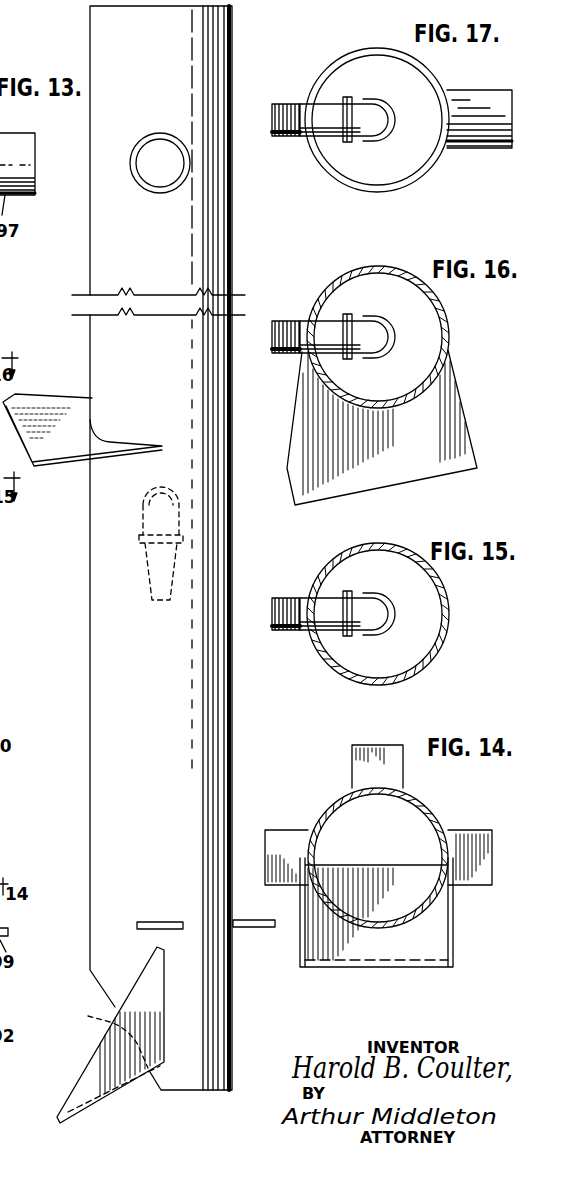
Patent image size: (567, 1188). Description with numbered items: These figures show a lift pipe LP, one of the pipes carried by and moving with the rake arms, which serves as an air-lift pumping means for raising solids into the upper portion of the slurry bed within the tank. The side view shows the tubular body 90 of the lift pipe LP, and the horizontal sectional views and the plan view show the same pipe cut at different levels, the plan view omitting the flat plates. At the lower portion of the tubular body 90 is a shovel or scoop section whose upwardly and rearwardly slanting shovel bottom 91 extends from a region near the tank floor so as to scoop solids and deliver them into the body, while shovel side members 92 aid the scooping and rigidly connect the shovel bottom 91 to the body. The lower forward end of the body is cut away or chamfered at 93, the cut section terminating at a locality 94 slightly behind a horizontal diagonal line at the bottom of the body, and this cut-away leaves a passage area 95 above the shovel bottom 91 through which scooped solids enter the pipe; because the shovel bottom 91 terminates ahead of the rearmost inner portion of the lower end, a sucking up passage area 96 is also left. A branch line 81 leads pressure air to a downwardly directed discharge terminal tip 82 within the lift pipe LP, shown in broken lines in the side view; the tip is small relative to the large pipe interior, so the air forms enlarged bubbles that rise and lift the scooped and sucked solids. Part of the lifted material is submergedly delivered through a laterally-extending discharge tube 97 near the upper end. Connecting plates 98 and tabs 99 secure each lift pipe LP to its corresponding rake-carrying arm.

In FIG. 13, the lift pipe LP is at (92, 608).
In FIG. 17, the lift pipe LP is at (333, 178).
In FIG. 16, the lift pipe LP is at (442, 302).
In FIG. 15, the lift pipe LP is at (448, 620).
In FIG. 14, the lift pipe LP is at (425, 805).
In FIG. 13, the tubular body 90 is at (233, 767).
In FIG. 13, the laterally-extending discharge tube 97 is at (154, 194).
In FIG. 17, the laterally-extending discharge tube 97 is at (470, 148).
In FIG. 13, the connecting plate 98 is at (68, 438).
In FIG. 16, the connecting plate 98 is at (418, 462).
In FIG. 13, the discharge terminal tip 82 is at (143, 561).
In FIG. 13, the tab 99 is at (240, 928).
In FIG. 14, the tab 99 is at (473, 875).
In FIG. 13, the shovel bottom 91 is at (100, 1104).
In FIG. 14, the shovel bottom 91 is at (373, 955).
In FIG. 13, the passage area 95 is at (108, 1005).
In FIG. 13, the shovel side member 92 is at (95, 1064).
In FIG. 13, the cut away portion 93 is at (152, 1078).
In FIG. 13, the terminating locality of cut section 94 is at (150, 1073).
In FIG. 13, the sucking up passage area 96 is at (192, 1061).
In FIG. 17, the branch line 81 is at (305, 112).
In FIG. 16, the branch line 81 is at (303, 322).
In FIG. 15, the branch line 81 is at (305, 598).